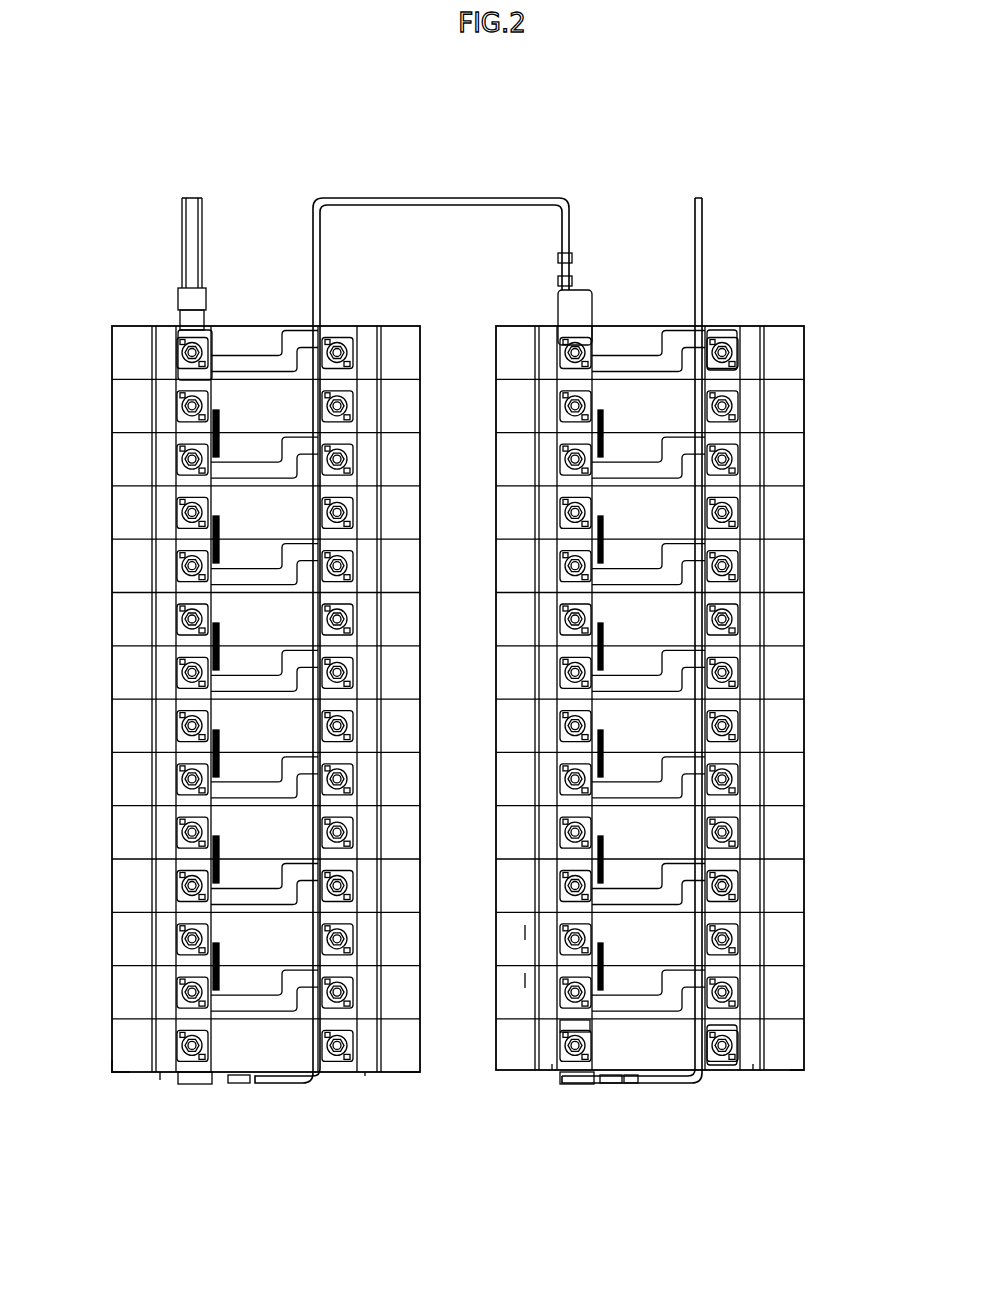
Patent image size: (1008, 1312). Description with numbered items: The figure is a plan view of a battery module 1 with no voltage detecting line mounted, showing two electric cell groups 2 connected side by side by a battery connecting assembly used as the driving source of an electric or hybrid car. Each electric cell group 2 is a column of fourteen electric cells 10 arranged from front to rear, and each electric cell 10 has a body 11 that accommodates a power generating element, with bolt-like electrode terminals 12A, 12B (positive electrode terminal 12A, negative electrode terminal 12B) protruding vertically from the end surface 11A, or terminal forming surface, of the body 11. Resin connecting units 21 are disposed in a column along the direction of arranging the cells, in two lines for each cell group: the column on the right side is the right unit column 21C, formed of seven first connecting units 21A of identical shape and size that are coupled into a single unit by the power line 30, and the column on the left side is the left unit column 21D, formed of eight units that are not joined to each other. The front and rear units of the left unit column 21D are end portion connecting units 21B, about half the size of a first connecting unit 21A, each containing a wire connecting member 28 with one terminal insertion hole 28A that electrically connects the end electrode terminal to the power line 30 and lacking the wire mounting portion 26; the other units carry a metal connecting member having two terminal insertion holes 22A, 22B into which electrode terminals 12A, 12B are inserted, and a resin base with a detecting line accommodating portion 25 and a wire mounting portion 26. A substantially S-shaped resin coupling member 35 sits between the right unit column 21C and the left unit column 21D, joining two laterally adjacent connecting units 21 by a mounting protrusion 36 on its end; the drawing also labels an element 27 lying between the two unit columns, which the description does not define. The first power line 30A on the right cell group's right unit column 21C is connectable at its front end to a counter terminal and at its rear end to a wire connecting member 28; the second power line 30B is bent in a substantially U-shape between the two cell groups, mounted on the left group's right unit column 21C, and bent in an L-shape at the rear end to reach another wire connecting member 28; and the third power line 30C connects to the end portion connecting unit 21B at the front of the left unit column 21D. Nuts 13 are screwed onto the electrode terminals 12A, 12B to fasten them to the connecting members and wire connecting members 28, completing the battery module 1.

The battery module 1 is at (525, 157).
The electric cell group 2 is at (112, 323).
The electric cell 10 is at (108, 352).
The body 11 is at (405, 1076).
The end surface 11A is at (130, 1078).
The electrode terminal 12A is at (180, 406).
The electrode terminal 12B is at (180, 352).
The nut 13 is at (393, 365).
The connecting unit 21 is at (500, 380).
The first connecting unit 21A is at (732, 328).
The end portion connecting unit 21B is at (205, 330).
The right unit column 21C is at (720, 1072).
The left unit column 21D is at (183, 1086).
The terminal insertion hole 22A is at (525, 980).
The terminal insertion hole 22B is at (525, 932).
The detecting line accommodating portion 25 is at (160, 1080).
The wire mounting portion 26 is at (300, 362).
The connecting piece 27 is at (290, 340).
The wire connecting member 28 is at (185, 345).
The terminal insertion hole 28A is at (563, 1027).
The power line 30 is at (378, 198).
The first power line 30A is at (662, 1082).
The second power line 30B is at (570, 228).
The third power line 30C is at (200, 205).
The coupling member 35 is at (262, 353).
The mounting protrusion 36 is at (600, 357).